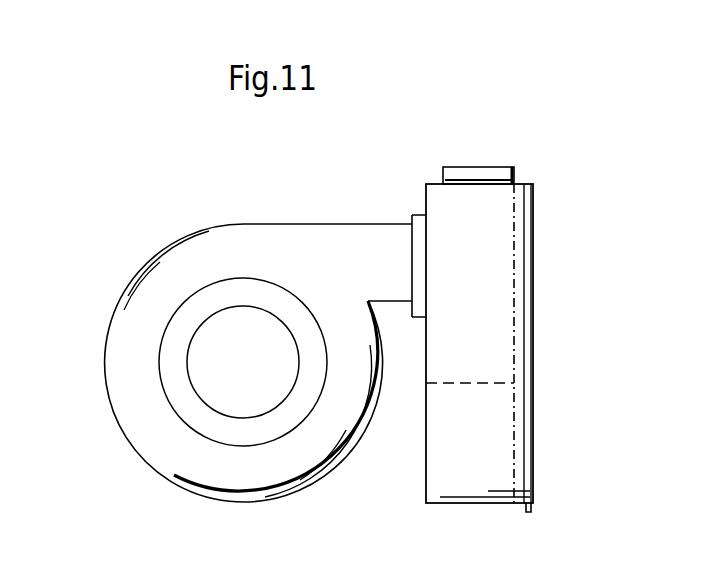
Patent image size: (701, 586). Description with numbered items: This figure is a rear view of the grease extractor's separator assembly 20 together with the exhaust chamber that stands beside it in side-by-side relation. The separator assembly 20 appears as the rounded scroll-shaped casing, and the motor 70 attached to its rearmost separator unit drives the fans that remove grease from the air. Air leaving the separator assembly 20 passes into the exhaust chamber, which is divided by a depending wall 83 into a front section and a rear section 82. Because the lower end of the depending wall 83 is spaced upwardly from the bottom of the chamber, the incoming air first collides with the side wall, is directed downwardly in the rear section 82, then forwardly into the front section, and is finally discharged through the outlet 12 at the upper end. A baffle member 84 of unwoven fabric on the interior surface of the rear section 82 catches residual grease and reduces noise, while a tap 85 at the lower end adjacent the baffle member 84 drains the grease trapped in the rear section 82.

The outlet 12 is at (490, 170).
The separator assembly 20 is at (107, 382).
The motor 70 is at (207, 348).
The rear section 82 is at (462, 467).
The depending wall 83 is at (448, 380).
The baffle member 84 is at (505, 413).
The tap 85 is at (528, 512).